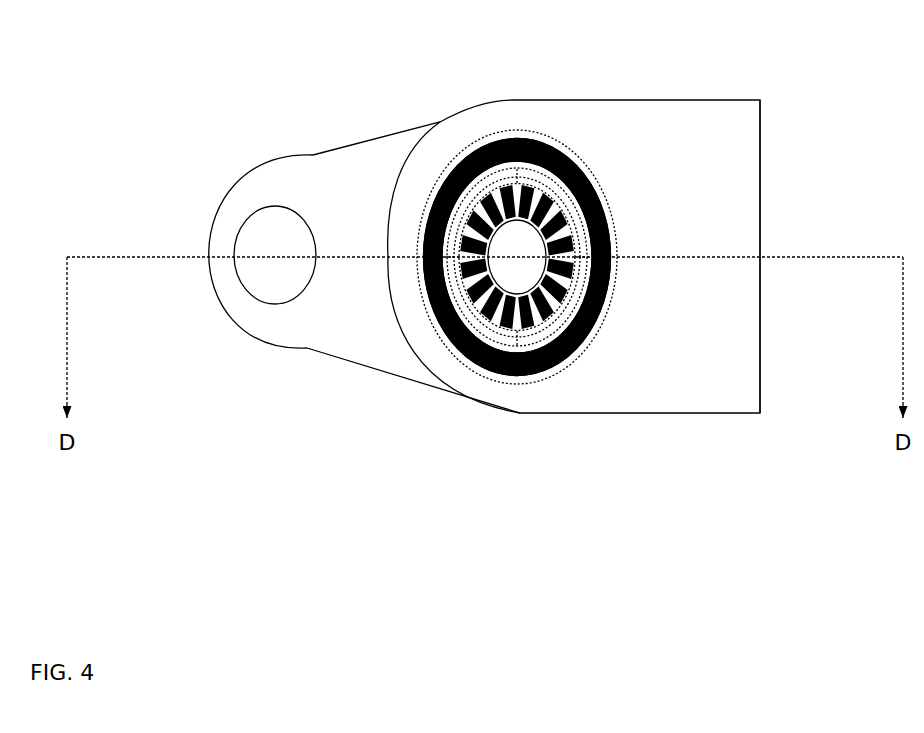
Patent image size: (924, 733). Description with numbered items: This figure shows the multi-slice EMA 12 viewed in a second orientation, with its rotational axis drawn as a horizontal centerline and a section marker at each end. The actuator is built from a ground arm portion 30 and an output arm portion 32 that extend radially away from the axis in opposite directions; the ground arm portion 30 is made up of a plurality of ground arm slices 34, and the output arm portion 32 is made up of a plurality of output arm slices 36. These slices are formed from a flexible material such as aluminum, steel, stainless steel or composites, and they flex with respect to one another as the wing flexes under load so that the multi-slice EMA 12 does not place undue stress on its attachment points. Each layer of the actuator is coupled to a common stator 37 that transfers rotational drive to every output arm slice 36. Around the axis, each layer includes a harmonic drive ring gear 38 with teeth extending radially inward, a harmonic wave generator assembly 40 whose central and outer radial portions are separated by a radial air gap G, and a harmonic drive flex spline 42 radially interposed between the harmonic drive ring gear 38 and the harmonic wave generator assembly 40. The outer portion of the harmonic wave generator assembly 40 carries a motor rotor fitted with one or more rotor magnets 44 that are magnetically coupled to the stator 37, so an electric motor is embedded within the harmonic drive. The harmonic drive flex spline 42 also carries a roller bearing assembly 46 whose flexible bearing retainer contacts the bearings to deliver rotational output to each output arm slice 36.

The multi-slice EMA 12 is at (563, 472).
The ground arm portion 30 is at (766, 181).
The output arm portion 32 is at (222, 212).
The ground arm slices 34 is at (740, 233).
The output arm slices 36 is at (320, 190).
The stator 37 is at (553, 326).
The harmonic drive ring gear 38 is at (589, 167).
The harmonic wave generator assembly 40 is at (462, 341).
The harmonic drive flex spline 42 is at (561, 151).
The rotor magnets 44 is at (449, 314).
The roller bearing assembly 46 is at (441, 187).
The radial air gap G is at (589, 272).